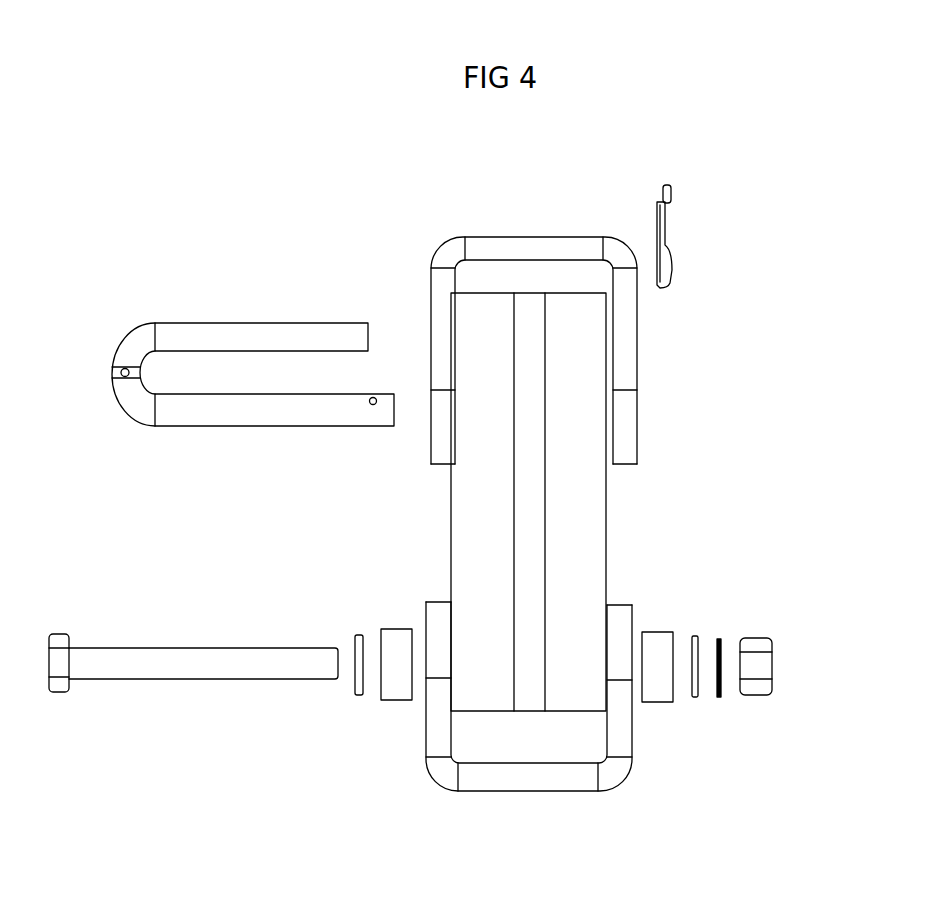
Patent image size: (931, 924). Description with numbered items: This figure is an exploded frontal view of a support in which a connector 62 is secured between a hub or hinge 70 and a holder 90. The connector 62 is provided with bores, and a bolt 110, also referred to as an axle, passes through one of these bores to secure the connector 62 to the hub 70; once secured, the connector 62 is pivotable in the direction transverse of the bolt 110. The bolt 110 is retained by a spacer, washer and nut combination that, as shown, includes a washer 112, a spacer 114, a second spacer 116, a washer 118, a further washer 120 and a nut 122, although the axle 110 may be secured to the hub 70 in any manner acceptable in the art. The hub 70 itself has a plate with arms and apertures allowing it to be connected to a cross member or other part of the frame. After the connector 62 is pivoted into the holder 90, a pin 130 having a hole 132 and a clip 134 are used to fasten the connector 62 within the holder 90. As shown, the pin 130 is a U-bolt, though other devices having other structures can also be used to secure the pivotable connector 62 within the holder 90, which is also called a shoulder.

The connector 62 is at (604, 500).
The hub 70 is at (561, 781).
The holder 90 is at (627, 346).
The bolt 110 is at (172, 656).
The washer 112 is at (355, 632).
The spacer 114 is at (398, 653).
The spacer 116 is at (653, 683).
The washer 118 is at (693, 637).
The washer 120 is at (718, 639).
The nut 122 is at (753, 688).
The pin 130 is at (208, 327).
The hole 132 is at (376, 398).
The clip 134 is at (667, 222).